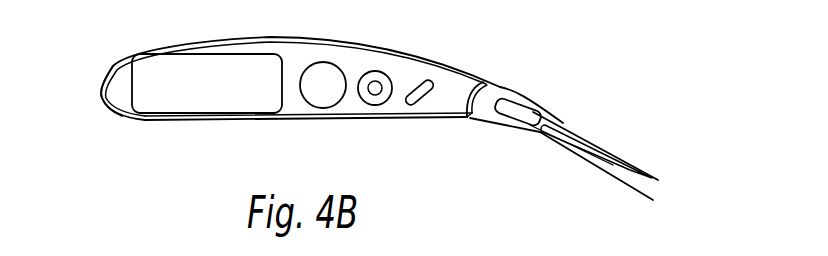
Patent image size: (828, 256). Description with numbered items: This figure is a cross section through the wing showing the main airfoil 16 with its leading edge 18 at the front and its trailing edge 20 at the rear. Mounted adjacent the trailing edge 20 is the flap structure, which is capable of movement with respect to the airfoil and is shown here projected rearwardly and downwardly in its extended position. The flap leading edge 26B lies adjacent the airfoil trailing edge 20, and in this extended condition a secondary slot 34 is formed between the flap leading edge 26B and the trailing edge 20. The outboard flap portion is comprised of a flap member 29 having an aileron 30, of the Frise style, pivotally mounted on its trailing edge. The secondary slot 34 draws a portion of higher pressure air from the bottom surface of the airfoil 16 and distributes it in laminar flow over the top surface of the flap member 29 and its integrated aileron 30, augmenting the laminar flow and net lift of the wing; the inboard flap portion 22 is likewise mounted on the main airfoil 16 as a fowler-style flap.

The main airfoil 16 is at (383, 55).
The leading edge 18 is at (101, 88).
The trailing edge 20 is at (500, 95).
The inboard flap portion 22 is at (598, 172).
The flap leading edge 26B is at (483, 118).
The flap member 29 is at (542, 102).
The aileron 30 is at (575, 125).
The secondary slot 34 is at (470, 97).